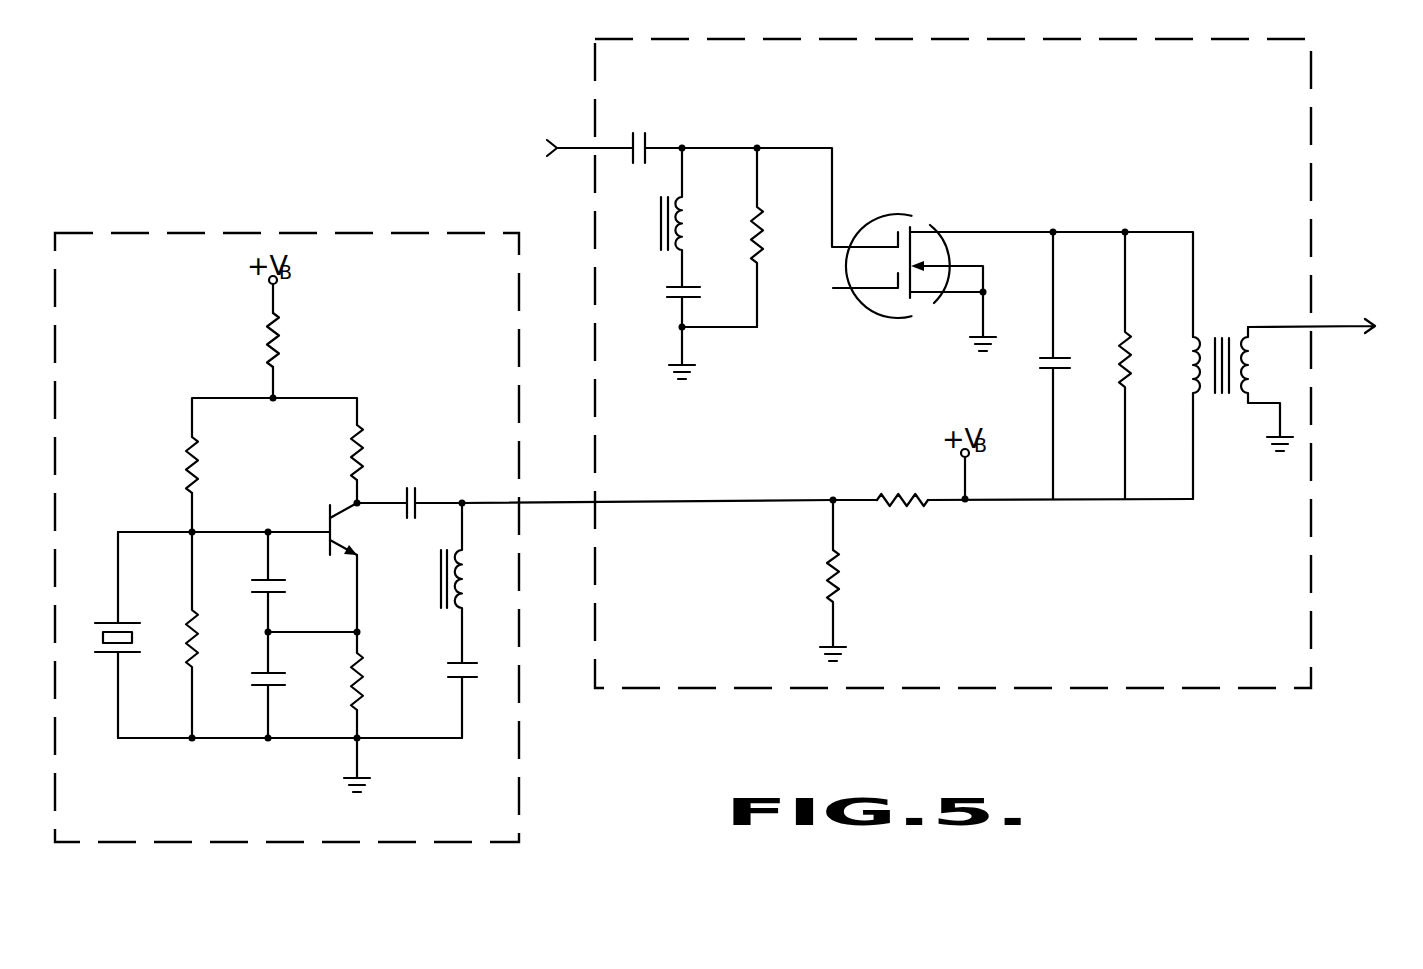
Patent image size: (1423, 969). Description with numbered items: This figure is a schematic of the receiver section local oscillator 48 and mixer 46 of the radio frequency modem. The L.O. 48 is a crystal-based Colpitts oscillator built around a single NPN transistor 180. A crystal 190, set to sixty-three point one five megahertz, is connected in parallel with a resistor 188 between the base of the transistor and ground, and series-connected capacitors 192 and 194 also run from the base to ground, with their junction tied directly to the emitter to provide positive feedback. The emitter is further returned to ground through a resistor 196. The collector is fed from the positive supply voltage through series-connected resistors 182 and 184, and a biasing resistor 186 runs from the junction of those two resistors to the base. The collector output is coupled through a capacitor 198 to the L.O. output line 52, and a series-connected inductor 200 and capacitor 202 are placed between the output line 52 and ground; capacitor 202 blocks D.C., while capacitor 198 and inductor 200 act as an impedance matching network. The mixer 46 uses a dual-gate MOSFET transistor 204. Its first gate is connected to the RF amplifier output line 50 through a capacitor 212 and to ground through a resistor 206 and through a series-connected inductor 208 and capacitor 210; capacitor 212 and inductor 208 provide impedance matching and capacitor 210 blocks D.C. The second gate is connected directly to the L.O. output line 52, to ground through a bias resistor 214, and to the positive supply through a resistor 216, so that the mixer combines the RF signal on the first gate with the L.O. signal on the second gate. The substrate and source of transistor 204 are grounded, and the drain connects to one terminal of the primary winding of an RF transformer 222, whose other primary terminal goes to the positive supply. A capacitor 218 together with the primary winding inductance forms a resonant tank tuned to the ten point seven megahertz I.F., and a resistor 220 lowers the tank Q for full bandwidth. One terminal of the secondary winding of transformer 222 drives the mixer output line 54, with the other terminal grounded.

The mixer 46 is at (877, 39).
The local oscillator 48 is at (180, 233).
The RF amplifier output line 50 is at (571, 147).
The L.O. output line 52 is at (568, 500).
The mixer output line 54 is at (1333, 325).
The NPN transistor 180 is at (352, 503).
The resistor 182 is at (352, 452).
The resistor 184 is at (268, 341).
The biasing resistor 186 is at (187, 471).
The resistor 188 is at (186, 624).
The crystal 190 is at (95, 637).
The capacitor 192 is at (288, 587).
The capacitor 194 is at (256, 675).
The resistor 196 is at (362, 689).
The capacitor 198 is at (416, 486).
The inductor 200 is at (440, 588).
The capacitor 202 is at (445, 675).
The dual-gate MOSFET transistor 204 is at (906, 213).
The resistor 206 is at (765, 223).
The inductor 208 is at (658, 228).
The capacitor 210 is at (663, 293).
The capacitor 212 is at (640, 136).
The bias resistor 214 is at (825, 576).
The resistor 216 is at (897, 510).
The capacitor 218 is at (1036, 364).
The resistor 220 is at (1118, 362).
The RF transformer 222 is at (1222, 337).